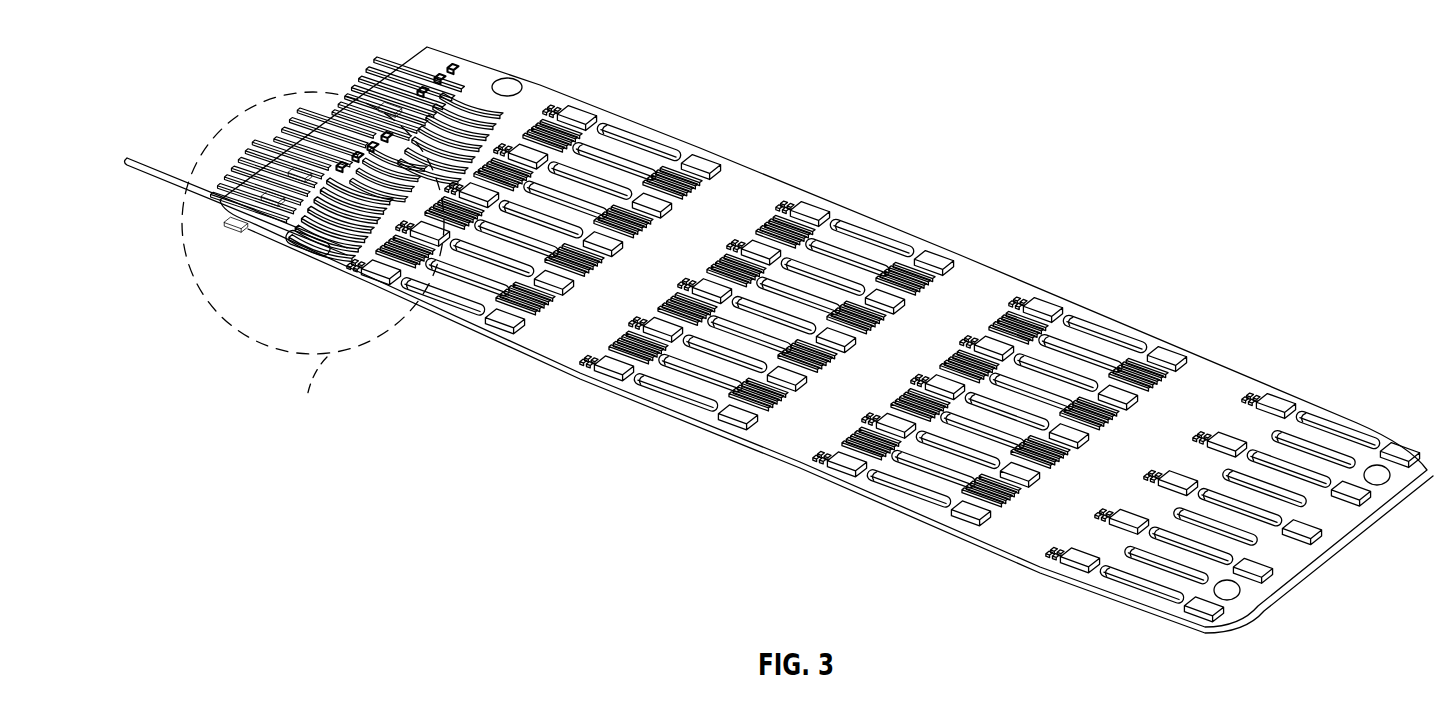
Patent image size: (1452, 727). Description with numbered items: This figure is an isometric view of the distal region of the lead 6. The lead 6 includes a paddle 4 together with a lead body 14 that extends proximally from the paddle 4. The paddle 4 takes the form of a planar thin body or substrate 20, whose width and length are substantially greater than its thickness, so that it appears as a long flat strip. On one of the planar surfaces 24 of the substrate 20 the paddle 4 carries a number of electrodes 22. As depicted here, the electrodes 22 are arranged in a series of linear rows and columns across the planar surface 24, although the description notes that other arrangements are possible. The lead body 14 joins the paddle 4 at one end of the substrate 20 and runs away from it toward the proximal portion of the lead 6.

The paddle 4 is at (985, 200).
The lead 6 is at (1088, 60).
The lead body 14 is at (163, 170).
The substrate 20 is at (668, 410).
The electrodes 22 is at (570, 112).
The planar surface 24 is at (762, 195).